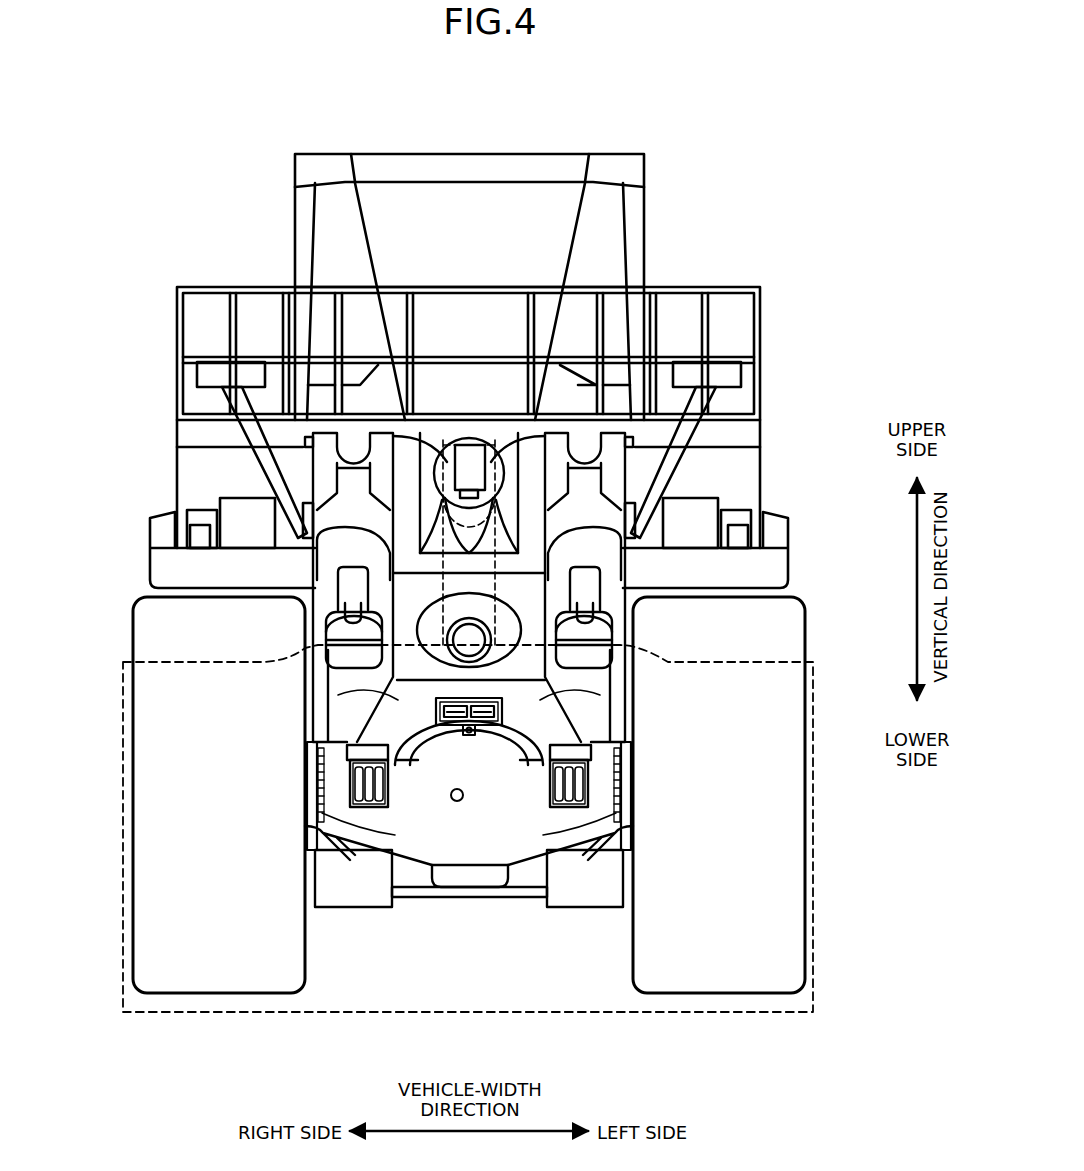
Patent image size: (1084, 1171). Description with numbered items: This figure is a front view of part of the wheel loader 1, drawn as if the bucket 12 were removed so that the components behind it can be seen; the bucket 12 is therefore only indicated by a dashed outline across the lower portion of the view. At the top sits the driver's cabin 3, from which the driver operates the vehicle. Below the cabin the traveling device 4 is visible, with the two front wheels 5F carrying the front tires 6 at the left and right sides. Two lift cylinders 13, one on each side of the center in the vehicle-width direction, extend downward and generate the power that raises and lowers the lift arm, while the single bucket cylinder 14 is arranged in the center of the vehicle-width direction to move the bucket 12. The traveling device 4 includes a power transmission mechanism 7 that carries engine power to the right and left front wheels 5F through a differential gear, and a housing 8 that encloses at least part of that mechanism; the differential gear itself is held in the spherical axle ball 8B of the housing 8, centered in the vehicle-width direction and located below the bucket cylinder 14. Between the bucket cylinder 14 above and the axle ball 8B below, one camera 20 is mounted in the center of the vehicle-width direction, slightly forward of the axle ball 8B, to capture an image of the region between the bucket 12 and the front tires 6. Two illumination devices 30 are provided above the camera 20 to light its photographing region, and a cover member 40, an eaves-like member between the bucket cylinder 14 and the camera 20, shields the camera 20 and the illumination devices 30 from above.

The wheel loader 1 is at (806, 116).
The driver's cabin 3 is at (546, 203).
The traveling device 4 is at (469, 846).
The front wheels 5F is at (318, 838).
The tires 6 is at (133, 631).
The power transmission mechanism 7 is at (463, 850).
The housing 8 is at (556, 853).
The axle ball 8B is at (483, 797).
The bucket 12 is at (123, 769).
The lift cylinder 13 is at (345, 690).
The bucket cylinder 14 is at (468, 455).
The camera 20 is at (469, 737).
The illumination device 30 is at (455, 727).
The cover member 40 is at (553, 741).